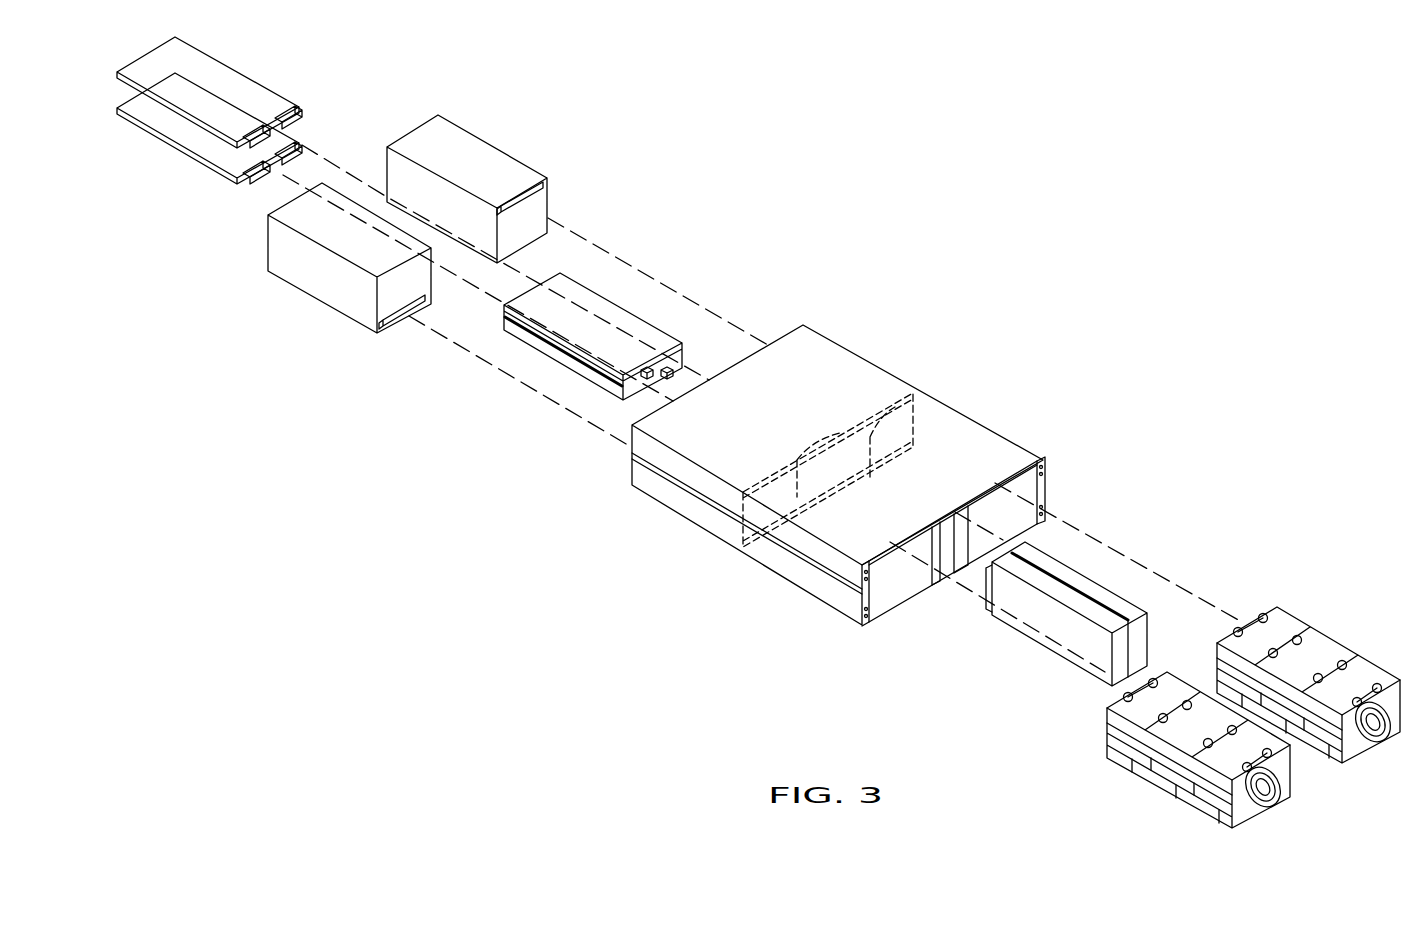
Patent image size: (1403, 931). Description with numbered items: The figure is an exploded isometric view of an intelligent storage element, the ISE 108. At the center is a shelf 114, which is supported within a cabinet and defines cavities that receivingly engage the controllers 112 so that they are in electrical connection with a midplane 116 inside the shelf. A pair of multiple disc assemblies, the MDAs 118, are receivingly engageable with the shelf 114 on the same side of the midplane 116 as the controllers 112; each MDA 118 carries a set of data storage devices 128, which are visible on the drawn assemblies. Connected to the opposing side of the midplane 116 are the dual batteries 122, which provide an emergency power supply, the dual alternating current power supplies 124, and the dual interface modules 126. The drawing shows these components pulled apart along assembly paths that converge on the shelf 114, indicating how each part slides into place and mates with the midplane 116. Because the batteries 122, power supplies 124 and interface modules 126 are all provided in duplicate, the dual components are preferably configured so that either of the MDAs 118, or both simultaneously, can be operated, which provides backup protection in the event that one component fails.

The intelligent storage element (ISE) 108 is at (884, 212).
The controller 112 is at (1100, 592).
The shelf 114 is at (815, 473).
The midplane 116 is at (838, 452).
The multiple disc assembly (MDA) 118 is at (1210, 688).
The battery 122 is at (585, 303).
The alternating current power supply 124 is at (470, 160).
The interface module 126 is at (235, 97).
The data storage device 128 is at (1280, 617).